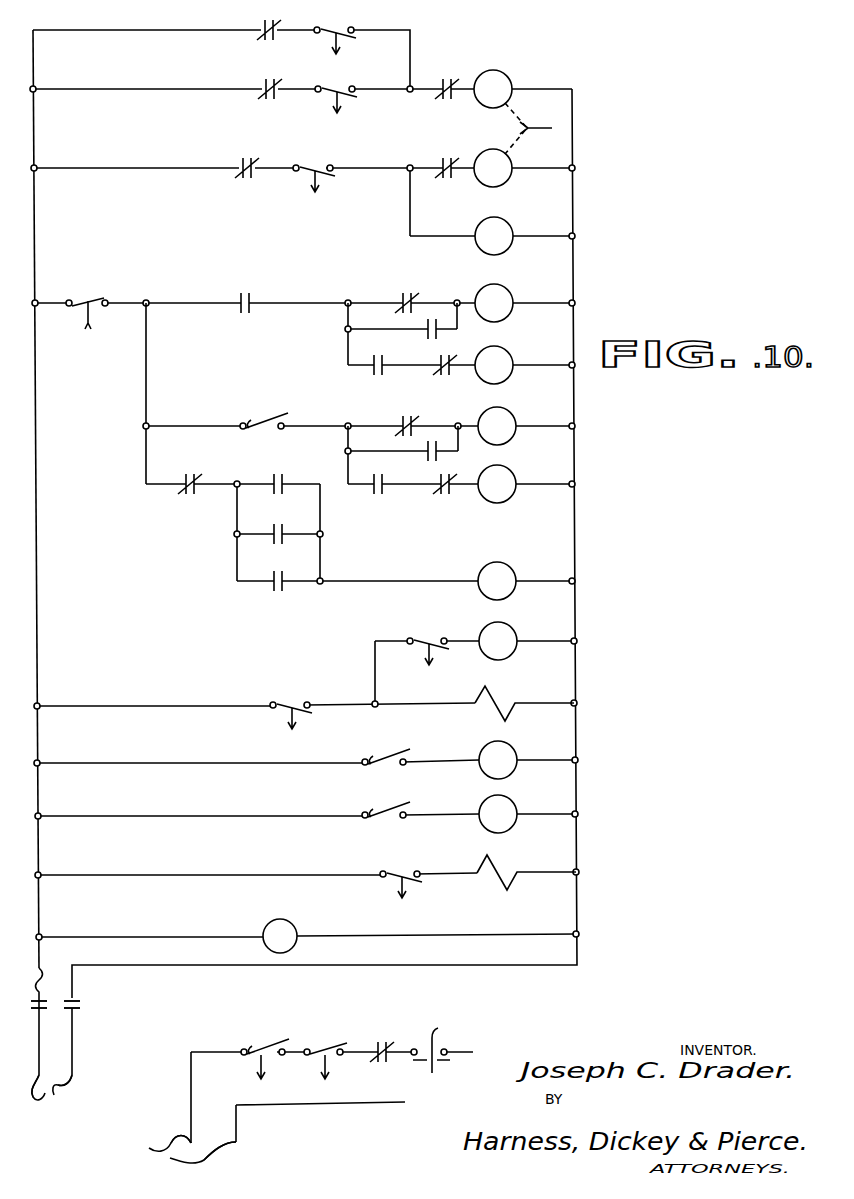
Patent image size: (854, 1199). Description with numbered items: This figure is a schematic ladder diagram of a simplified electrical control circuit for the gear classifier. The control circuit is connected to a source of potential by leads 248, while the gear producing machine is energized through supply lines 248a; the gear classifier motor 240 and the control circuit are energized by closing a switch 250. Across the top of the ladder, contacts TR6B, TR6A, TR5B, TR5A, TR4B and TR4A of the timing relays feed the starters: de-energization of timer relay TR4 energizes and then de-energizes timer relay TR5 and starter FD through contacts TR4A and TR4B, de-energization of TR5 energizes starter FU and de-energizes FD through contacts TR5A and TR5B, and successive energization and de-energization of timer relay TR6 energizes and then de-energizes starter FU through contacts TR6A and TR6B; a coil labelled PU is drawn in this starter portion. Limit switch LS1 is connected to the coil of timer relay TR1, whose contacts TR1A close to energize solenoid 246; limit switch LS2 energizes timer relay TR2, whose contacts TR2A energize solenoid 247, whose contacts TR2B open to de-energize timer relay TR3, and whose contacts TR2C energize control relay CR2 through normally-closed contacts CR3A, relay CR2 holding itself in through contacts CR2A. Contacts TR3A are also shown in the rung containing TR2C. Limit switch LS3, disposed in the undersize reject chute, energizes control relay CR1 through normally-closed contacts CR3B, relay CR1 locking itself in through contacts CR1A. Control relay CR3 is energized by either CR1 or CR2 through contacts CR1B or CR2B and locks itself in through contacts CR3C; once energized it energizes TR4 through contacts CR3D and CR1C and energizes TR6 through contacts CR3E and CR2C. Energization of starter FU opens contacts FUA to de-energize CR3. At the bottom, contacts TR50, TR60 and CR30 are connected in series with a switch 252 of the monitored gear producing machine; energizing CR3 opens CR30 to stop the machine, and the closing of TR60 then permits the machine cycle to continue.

The gear classifier motor 240 is at (294, 926).
The solenoid 246 is at (514, 688).
The solenoid 247 is at (526, 866).
The leads 248 is at (55, 1097).
The supply lines 248a is at (172, 1152).
The switch 250 is at (50, 1007).
The switch of the gear producing machine 252 is at (444, 1045).
The contacts of timer relay TR6' TR6B is at (246, 21).
The contacts of timer relay TR6' TR6A is at (336, 28).
The contacts of timer relay TR5' TR5B is at (253, 79).
The contacts of timer relay TR5' TR5A is at (334, 88).
The contacts of timer relay TR4' TR4B is at (238, 157).
The contacts of timer relay TR4' TR4A is at (312, 166).
The starter FD is at (473, 122).
The pull-up relay PU is at (493, 89).
The starter FU is at (447, 157).
The timing relay TR5 is at (508, 212).
The timer relay TR3 contact A TR3A is at (83, 300).
The contacts of timer relay TR2' TR2C is at (246, 292).
The normally-closed contacts of relay CR3' CR3A is at (406, 287).
The control relay CR2 is at (506, 320).
The holding contacts of relay CR2' CR2A is at (426, 320).
The contacts of relay CR3' CR3E is at (375, 355).
The contacts of relay CR2' CR2C is at (466, 352).
The timing relay TR6 is at (504, 384).
The limit switch LS3 is at (264, 412).
The normally-closed contacts of relay CR3' CR3B is at (413, 411).
The control relay CR1 is at (512, 415).
The locking contacts of relay CR1' CR1A is at (426, 440).
The contacts of relay CR3' CR3D is at (375, 495).
The contacts of relay CR1' CR1C is at (460, 497).
The timing relay TR4 is at (530, 464).
The contacts of starter FU' FUA is at (187, 473).
The contacts of relay CR1' CR1B is at (277, 473).
The contacts of relay CR2' CR2B is at (268, 522).
The locking contacts of relay CR3' CR3C is at (274, 569).
The control relay CR3 is at (531, 558).
The contacts of timer relay TR2' TR2B is at (445, 628).
The timing relay TR3 is at (510, 626).
The contacts of timer relay TR1' TR1A is at (300, 690).
The limit switch LS1 is at (384, 747).
The timing relay TR1 is at (530, 746).
The limit switch LS2 is at (384, 799).
The timing relay TR2 is at (530, 798).
The contacts of timer relay TR2' TR2A is at (412, 858).
The contacts of timer relay TR5' TR50 is at (268, 1037).
The contacts of timer relay TR6' TR60 is at (328, 1033).
The contacts of control relay CR3' CR30 is at (386, 1037).